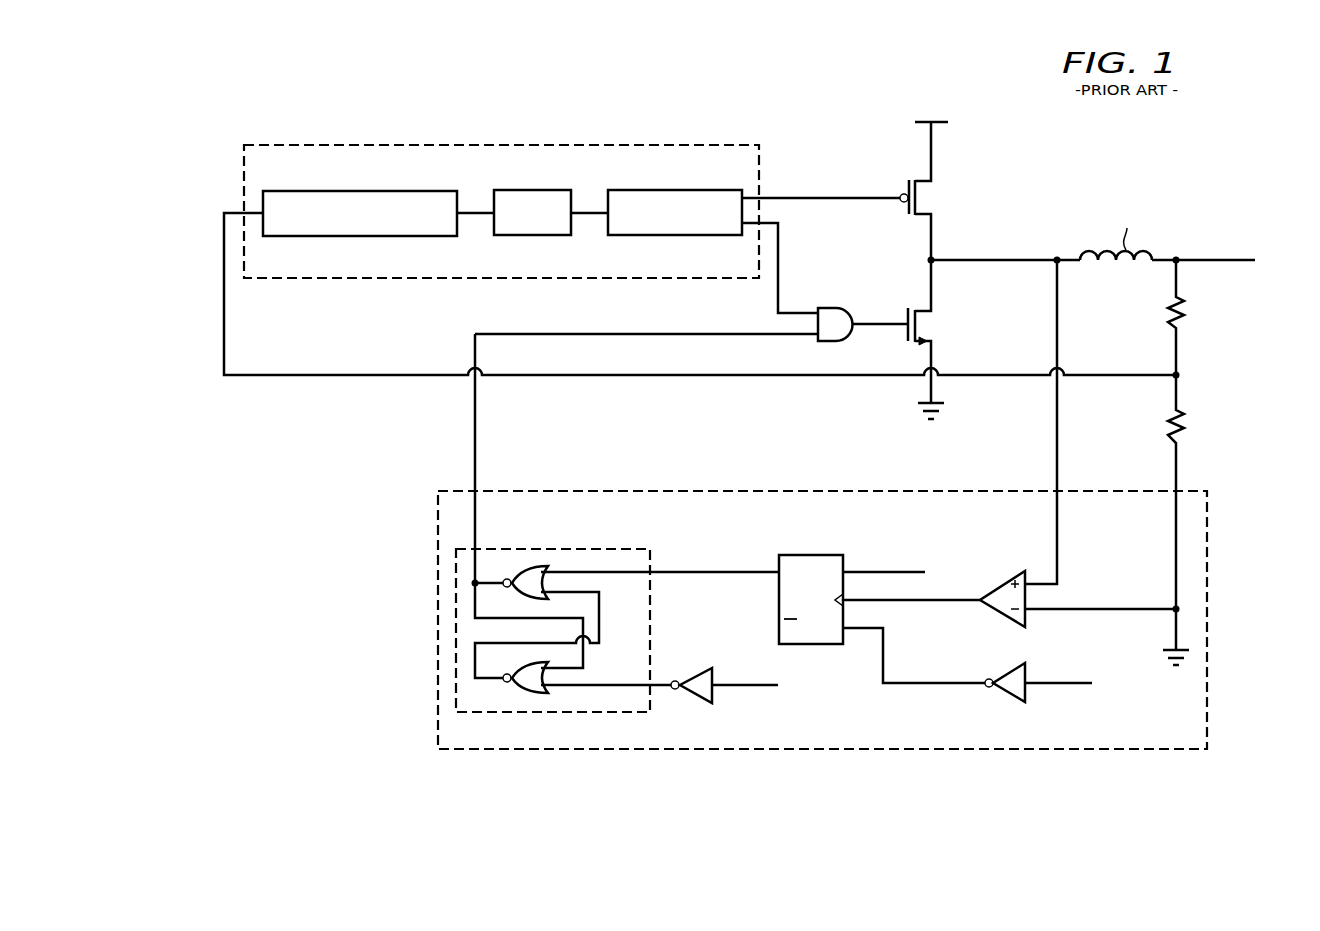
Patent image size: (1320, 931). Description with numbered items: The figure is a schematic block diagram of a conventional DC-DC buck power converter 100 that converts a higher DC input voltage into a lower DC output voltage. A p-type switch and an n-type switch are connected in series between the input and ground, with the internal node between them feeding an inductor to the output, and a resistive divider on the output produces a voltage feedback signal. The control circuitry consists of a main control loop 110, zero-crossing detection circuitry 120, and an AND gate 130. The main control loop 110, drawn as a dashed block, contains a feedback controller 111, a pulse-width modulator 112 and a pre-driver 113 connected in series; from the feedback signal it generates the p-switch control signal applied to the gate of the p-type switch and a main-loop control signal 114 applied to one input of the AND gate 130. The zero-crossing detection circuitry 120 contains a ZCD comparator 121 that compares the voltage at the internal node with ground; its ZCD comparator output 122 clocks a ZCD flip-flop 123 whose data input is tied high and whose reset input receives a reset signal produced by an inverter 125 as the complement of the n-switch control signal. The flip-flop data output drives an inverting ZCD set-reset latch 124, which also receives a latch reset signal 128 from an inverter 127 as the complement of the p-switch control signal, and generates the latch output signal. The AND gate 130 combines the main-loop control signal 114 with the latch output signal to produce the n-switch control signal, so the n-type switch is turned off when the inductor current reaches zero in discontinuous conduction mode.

The DC-DC buck power converter 100 is at (1133, 123).
The main control loop 110 is at (708, 145).
The feedback controller 111 is at (394, 190).
The pulse-width modulator 112 is at (518, 190).
The pre-driver 113 is at (686, 190).
The main-loop control signal 114 is at (780, 236).
The zero-crossing detection circuitry 120 is at (437, 497).
The ZCD comparator 121 is at (1007, 578).
The ZCD comparator output 122 is at (912, 602).
The ZCD flip-flop 123 is at (813, 555).
The inverting ZCD set-reset latch 124 is at (596, 549).
The inverter 125 is at (1008, 697).
The inverter 127 is at (698, 667).
The latch reset signal 128 is at (597, 685).
The AND gate 130 is at (833, 306).